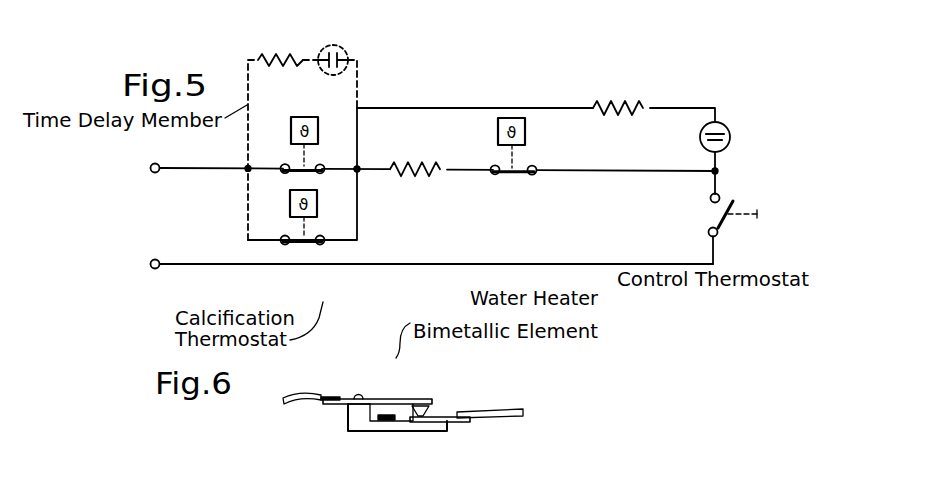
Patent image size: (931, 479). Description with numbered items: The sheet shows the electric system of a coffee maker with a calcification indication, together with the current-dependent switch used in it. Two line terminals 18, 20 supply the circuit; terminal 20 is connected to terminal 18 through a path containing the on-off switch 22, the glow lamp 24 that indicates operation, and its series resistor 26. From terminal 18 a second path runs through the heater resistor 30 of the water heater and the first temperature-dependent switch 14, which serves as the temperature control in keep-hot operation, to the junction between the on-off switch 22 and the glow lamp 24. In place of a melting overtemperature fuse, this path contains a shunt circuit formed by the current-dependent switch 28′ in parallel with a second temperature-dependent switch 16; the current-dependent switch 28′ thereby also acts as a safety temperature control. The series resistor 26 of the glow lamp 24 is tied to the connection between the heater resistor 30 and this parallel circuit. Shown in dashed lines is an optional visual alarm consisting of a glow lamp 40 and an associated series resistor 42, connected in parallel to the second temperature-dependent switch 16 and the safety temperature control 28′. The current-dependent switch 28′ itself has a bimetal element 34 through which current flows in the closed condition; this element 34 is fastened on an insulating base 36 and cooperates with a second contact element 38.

In FIG. 5, the temperature-dependent switch 14 is at (613, 278).
In FIG. 5, the second temperature-dependent switch 16 is at (308, 245).
In FIG. 5, the line terminal 18 is at (152, 166).
In FIG. 5, the line terminal 20 is at (150, 264).
In FIG. 5, the on-off switch 22 is at (722, 229).
In FIG. 5, the glow lamp 24 is at (723, 128).
In FIG. 5, the series resistor 26 is at (622, 100).
In FIG. 5, the current-dependent switch 28′ is at (290, 124).
In FIG. 6, the current-dependent switch 28′ is at (440, 393).
In FIG. 5, the heater resistor 30 is at (468, 297).
In FIG. 6, the bimetal element 34 is at (387, 399).
In FIG. 6, the insulating base 36 is at (350, 413).
In FIG. 6, the second contact element 38 is at (452, 423).
In FIG. 5, the glow lamp 40 is at (347, 50).
In FIG. 5, the series resistor 42 is at (262, 50).